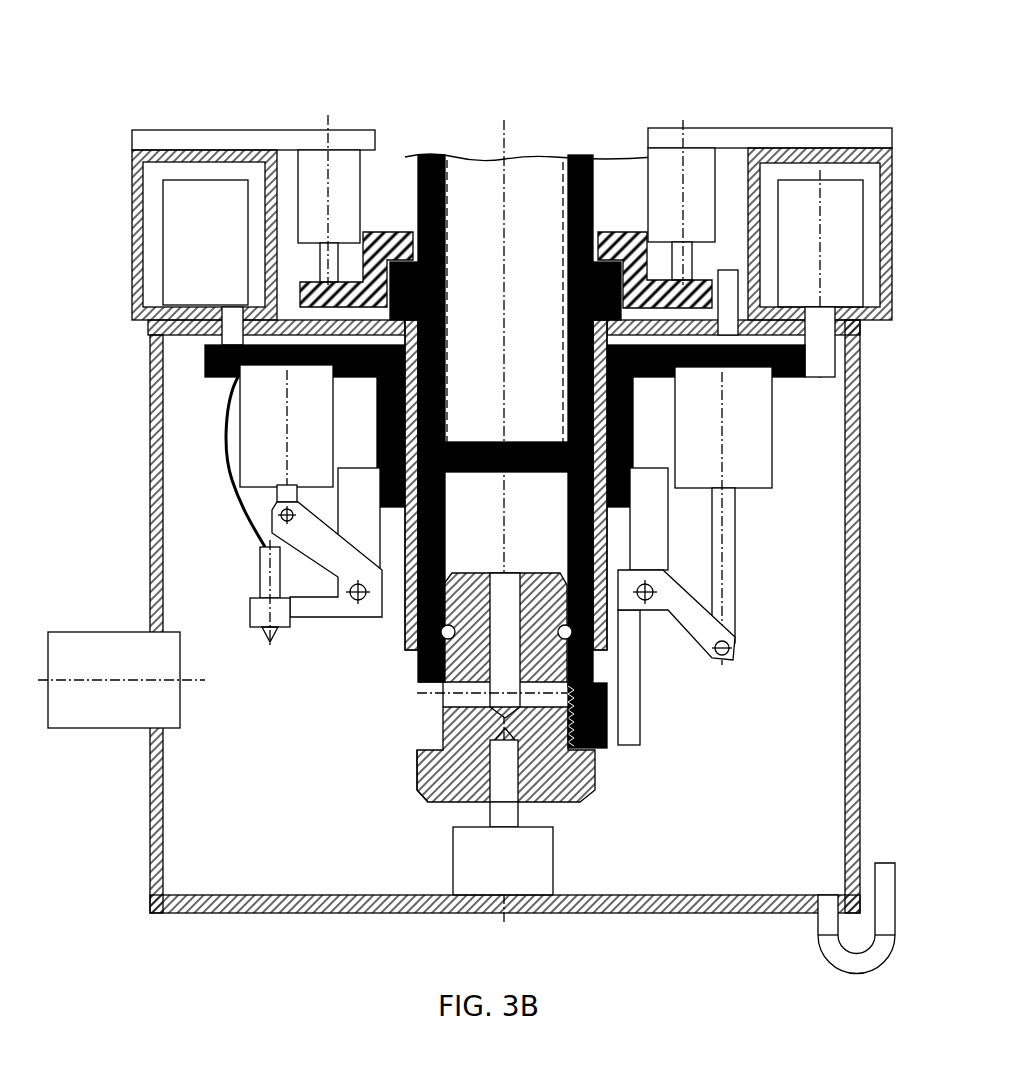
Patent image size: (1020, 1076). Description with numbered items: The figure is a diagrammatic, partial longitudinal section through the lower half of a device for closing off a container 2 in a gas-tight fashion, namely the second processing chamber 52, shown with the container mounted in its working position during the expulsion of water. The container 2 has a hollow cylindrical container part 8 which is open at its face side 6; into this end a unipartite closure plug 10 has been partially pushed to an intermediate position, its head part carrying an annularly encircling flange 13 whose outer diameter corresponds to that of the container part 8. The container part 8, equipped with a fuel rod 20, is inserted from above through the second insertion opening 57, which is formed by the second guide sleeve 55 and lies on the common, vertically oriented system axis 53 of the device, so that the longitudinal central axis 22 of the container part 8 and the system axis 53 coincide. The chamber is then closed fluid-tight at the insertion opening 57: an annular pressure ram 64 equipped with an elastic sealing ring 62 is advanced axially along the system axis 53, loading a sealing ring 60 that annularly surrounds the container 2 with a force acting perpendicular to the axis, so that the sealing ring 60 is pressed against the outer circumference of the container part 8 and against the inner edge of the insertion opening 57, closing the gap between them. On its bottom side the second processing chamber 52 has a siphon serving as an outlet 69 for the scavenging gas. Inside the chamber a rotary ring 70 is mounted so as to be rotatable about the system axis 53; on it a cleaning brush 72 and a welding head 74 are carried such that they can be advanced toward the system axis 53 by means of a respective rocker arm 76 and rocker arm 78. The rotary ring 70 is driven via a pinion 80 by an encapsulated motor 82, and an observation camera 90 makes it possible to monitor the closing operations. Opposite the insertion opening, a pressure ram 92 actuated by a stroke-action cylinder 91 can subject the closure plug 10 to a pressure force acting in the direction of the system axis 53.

The container 2 is at (405, 670).
The face side 6 is at (433, 683).
The container part 8 is at (600, 523).
The closure plug 10 is at (567, 778).
The flange 13 is at (423, 770).
The fuel rod 20 is at (540, 190).
The longitudinal central axis 22 is at (500, 213).
The second processing chamber 52 is at (365, 942).
The system axis 53 is at (503, 857).
The second guide sleeve 55 is at (405, 613).
The second insertion opening 57 is at (443, 335).
The sealing ring 60 is at (610, 230).
The elastic sealing ring 62 is at (380, 228).
The annular pressure ram 64 is at (302, 280).
The outlet 69 is at (887, 895).
The rotary ring 70 is at (792, 378).
The cleaning brush 72 is at (625, 713).
The welding head 74 is at (263, 572).
The rocker arm 76 is at (685, 617).
The rocker arm 78 is at (327, 547).
The pinion 80 is at (817, 357).
The encapsulated motor 82 is at (847, 270).
The observation camera 90 is at (165, 712).
The stroke-action cylinder 91 is at (475, 877).
The pressure ram 92 is at (497, 815).